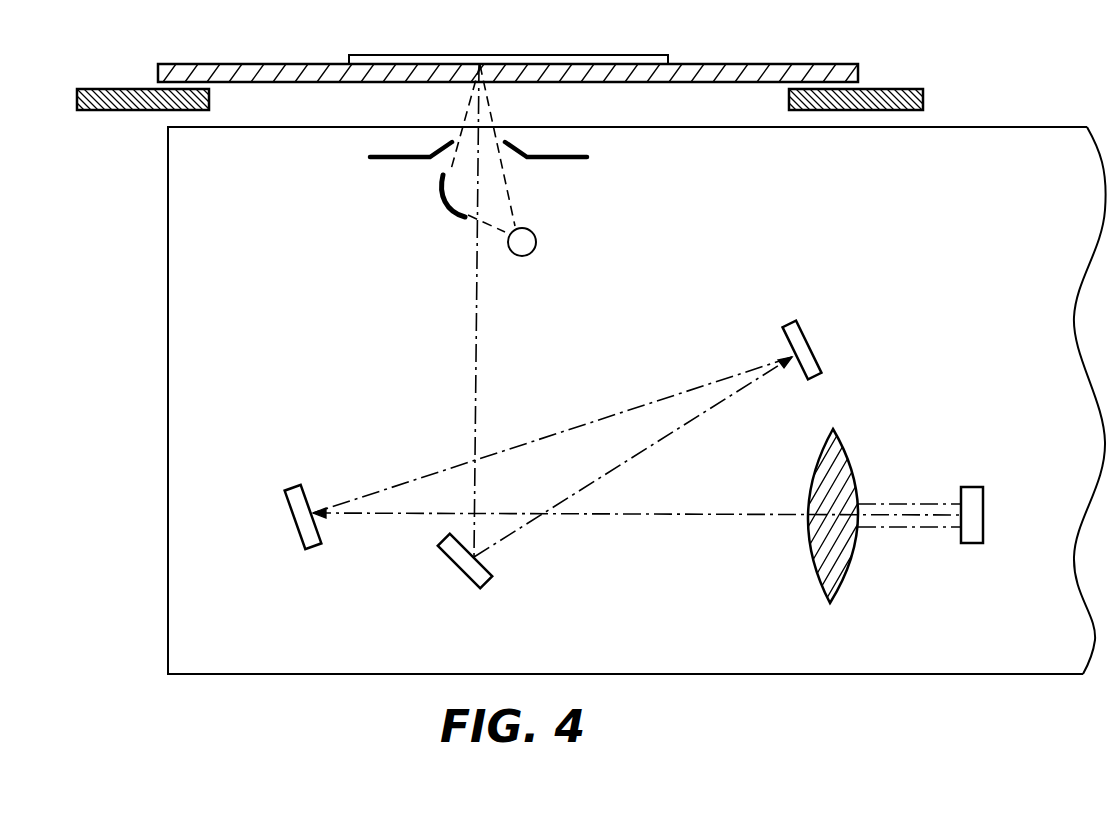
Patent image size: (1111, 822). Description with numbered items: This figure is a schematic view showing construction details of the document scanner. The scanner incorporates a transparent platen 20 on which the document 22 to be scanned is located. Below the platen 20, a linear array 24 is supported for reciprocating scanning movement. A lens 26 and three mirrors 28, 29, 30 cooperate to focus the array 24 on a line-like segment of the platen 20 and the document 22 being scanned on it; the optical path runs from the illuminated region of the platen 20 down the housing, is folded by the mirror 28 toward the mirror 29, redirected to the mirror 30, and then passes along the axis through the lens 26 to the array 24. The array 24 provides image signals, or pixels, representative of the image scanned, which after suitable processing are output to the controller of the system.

The transparent platen 20 is at (272, 83).
The document 22 is at (560, 55).
The linear array 24 is at (972, 487).
The lens 26 is at (850, 568).
The mirror 28 is at (467, 578).
The mirror 29 is at (810, 342).
The mirror 30 is at (298, 528).